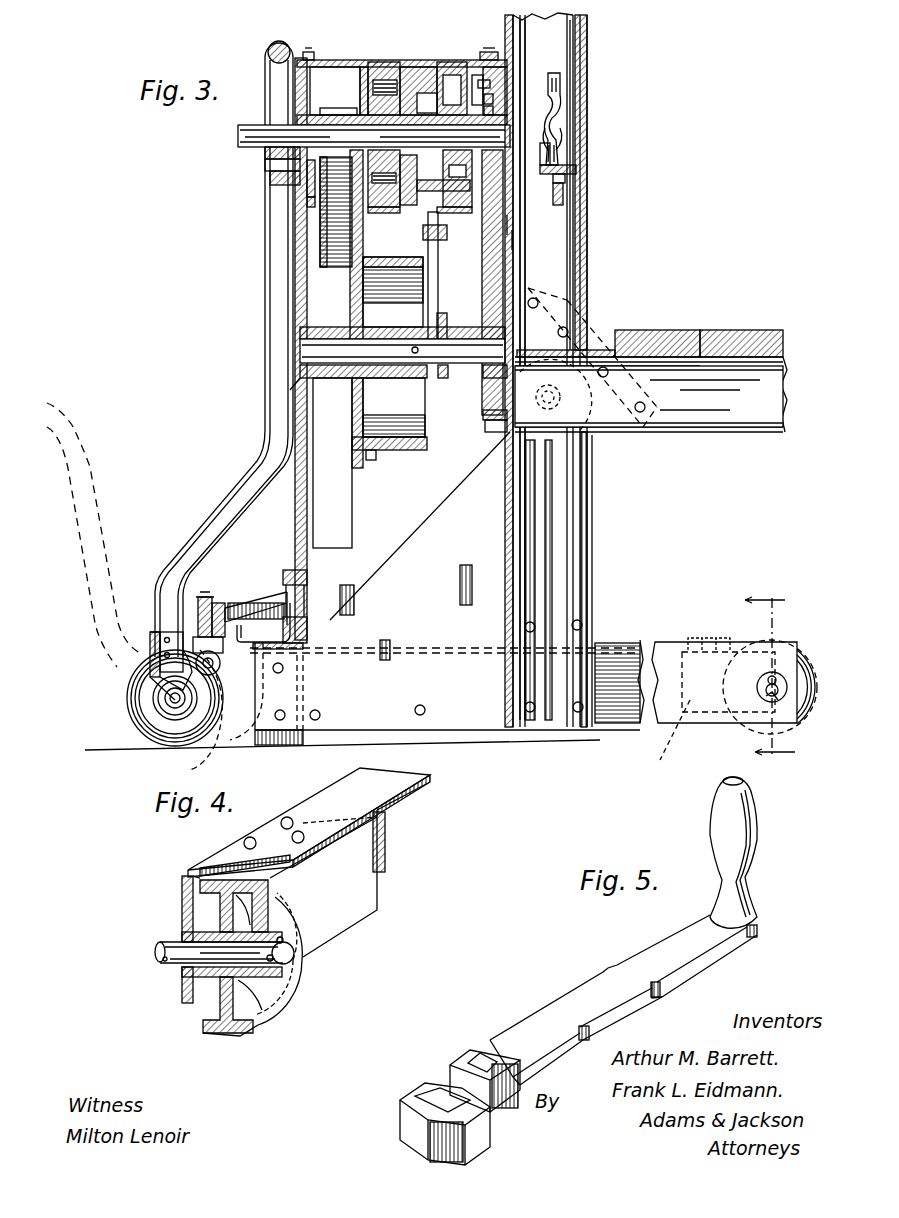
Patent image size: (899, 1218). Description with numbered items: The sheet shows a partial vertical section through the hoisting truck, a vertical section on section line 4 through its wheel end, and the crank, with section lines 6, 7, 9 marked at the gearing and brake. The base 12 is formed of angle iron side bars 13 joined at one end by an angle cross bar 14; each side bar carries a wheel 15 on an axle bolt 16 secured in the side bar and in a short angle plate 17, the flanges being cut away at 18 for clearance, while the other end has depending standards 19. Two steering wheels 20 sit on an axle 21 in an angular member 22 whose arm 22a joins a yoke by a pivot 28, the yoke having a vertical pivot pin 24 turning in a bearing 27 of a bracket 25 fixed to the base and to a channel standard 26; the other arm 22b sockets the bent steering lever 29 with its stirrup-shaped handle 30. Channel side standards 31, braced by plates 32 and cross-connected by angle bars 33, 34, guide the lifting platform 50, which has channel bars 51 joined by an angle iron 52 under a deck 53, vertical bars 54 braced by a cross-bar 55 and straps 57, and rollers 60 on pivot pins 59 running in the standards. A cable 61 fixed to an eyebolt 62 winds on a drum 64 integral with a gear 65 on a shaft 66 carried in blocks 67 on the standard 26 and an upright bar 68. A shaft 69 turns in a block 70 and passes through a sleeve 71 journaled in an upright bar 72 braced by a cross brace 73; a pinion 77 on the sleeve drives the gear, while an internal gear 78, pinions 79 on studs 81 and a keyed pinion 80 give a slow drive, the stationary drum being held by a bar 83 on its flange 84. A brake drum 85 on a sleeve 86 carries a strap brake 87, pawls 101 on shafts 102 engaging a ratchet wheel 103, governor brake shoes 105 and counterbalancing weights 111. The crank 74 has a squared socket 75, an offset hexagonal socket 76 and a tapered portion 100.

In FIG. 3, the section line 4- 4 is at (770, 678).
In FIG. 3, the gear 6 is at (358, 38).
In FIG. 3, the gear 7 is at (395, 38).
In FIG. 3, the gear 9 is at (454, 41).
In FIG. 3, the base 12 is at (660, 634).
In FIG. 4, the base 12 is at (330, 784).
In FIG. 3, the side bars 13 is at (612, 723).
In FIG. 4, the side bars 13 is at (182, 878).
In FIG. 3, the cross bar 14 is at (294, 648).
In FIG. 3, the wheel 15 is at (800, 725).
In FIG. 4, the wheel 15 is at (222, 1033).
In FIG. 3, the axle bolt 16 is at (780, 676).
In FIG. 4, the axle bolt 16 is at (290, 955).
In FIG. 3, the angle plate 17 is at (673, 737).
In FIG. 4, the angle plate 17 is at (378, 906).
In FIG. 4, the cut-away 18 is at (218, 866).
In FIG. 3, the depending standards 19 is at (304, 740).
In FIG. 3, the steering wheels 20 is at (128, 708).
In FIG. 3, the axle 21 is at (170, 700).
In FIG. 3, the angular member 22 is at (165, 697).
In FIG. 3, the arm 22a is at (190, 700).
In FIG. 3, the arm 22b is at (147, 652).
In FIG. 3, the vertical pivot pin 24 is at (218, 604).
In FIG. 3, the bracket 25 is at (190, 630).
In FIG. 3, the vertical standard 26 is at (297, 540).
In FIG. 3, the bearing 27 is at (198, 606).
In FIG. 3, the pivot 28 is at (220, 660).
In FIG. 3, the steering lever 29 is at (257, 453).
In FIG. 3, the stirrup-shaped handle 30 is at (268, 64).
In FIG. 3, the side standards 31 is at (594, 27).
In FIG. 3, the plates 32 is at (446, 504).
In FIG. 3, the angle bar 33 is at (490, 424).
In FIG. 3, the plate 34 is at (527, 58).
In FIG. 3, the lifting platform 50 is at (790, 323).
In FIG. 3, the channel bars 51 is at (785, 432).
In FIG. 3, the angle iron 52 is at (588, 340).
In FIG. 3, the deck 53 is at (692, 330).
In FIG. 3, the vertical bars 54 is at (575, 272).
In FIG. 3, the cross-bar 55 is at (572, 166).
In FIG. 3, the straps 57 is at (590, 312).
In FIG. 3, the pivot pins 59 is at (595, 432).
In FIG. 3, the rollers 60 is at (590, 465).
In FIG. 3, the cable 61 is at (372, 457).
In FIG. 3, the eyebolt 62 is at (560, 120).
In FIG. 3, the drum 64 is at (410, 450).
In FIG. 3, the gear 65 is at (363, 486).
In FIG. 3, the shaft 66 is at (462, 360).
In FIG. 3, the blocks 67 is at (298, 380).
In FIG. 3, the upright bar 68 is at (503, 273).
In FIG. 3, the shaft 69 is at (282, 156).
In FIG. 3, the block 70 is at (493, 112).
In FIG. 3, the sleeve 71 is at (285, 168).
In FIG. 3, the upright bar 72 is at (290, 180).
In FIG. 3, the cross brace 73 is at (312, 52).
In FIG. 5, the crank 74 is at (526, 1022).
In FIG. 5, the squared socket 75 is at (480, 1052).
In FIG. 5, the hexagonal socket 76 is at (428, 1092).
In FIG. 3, the pinion 77 is at (330, 108).
In FIG. 3, the internal gear 78 is at (368, 66).
In FIG. 3, the pinions 79 is at (380, 70).
In FIG. 3, the pinion 80 is at (308, 205).
In FIG. 3, the studs 81 is at (380, 88).
In FIG. 3, the bar 83 is at (445, 322).
In FIG. 3, the flange 84 is at (440, 258).
In FIG. 3, the brake drum 85 is at (512, 222).
In FIG. 3, the sleeve 86 is at (493, 98).
In FIG. 3, the strap brake 87 is at (513, 240).
In FIG. 5, the tapered portion 100 is at (592, 975).
In FIG. 3, the pawls 101 is at (488, 52).
In FIG. 3, the shafts 102 is at (490, 84).
In FIG. 3, the ratchet wheel 103 is at (422, 215).
In FIG. 3, the brake shoes 105 is at (422, 70).
In FIG. 3, the counterbalancing weights 111 is at (452, 72).